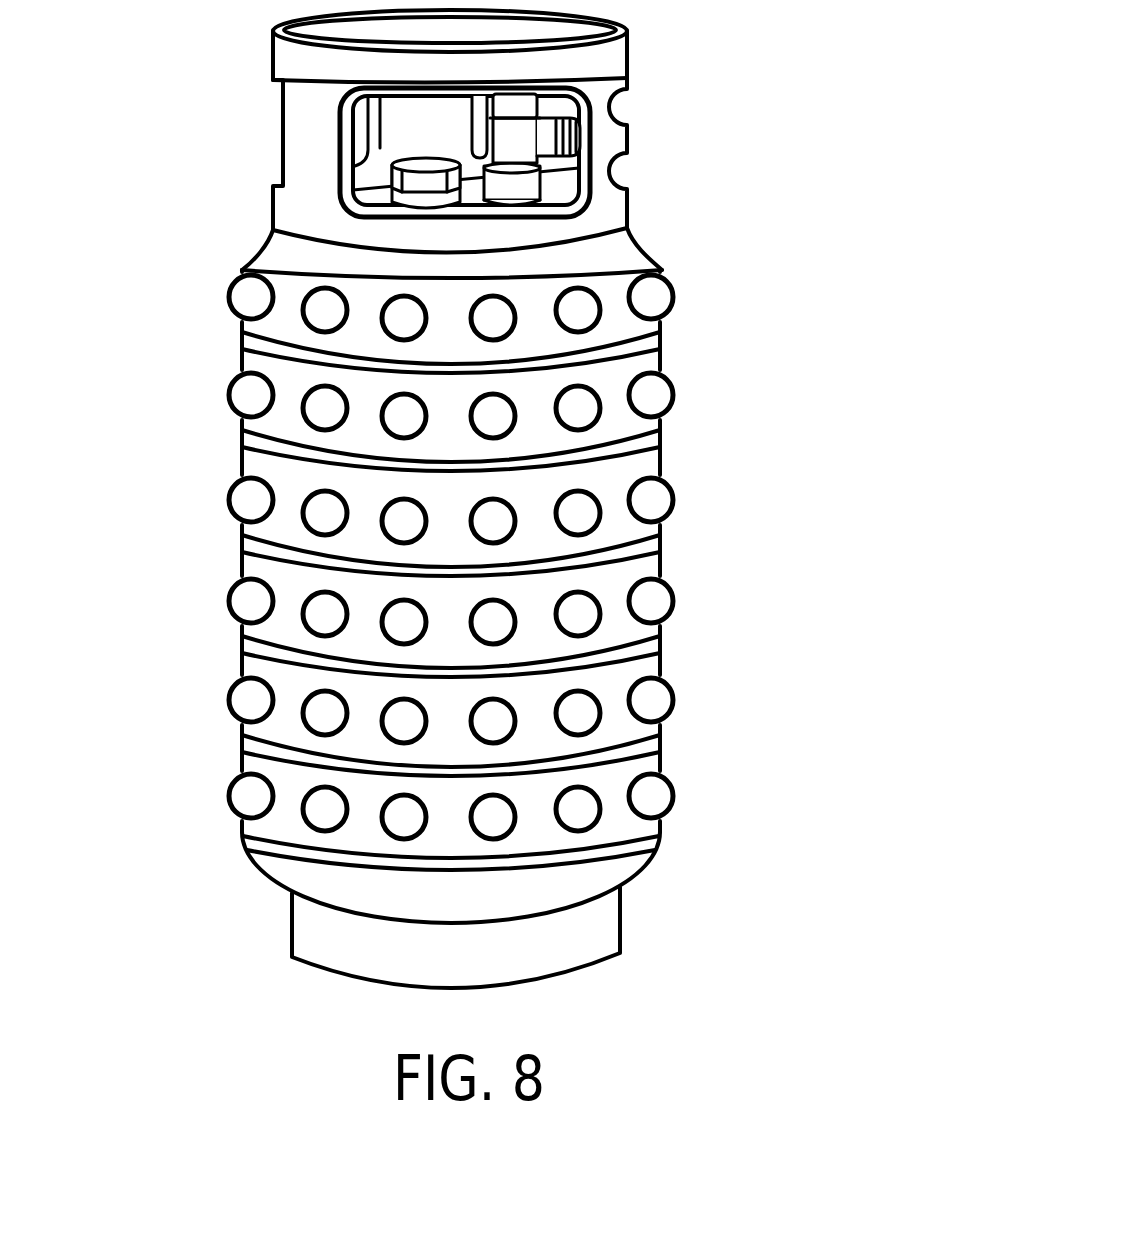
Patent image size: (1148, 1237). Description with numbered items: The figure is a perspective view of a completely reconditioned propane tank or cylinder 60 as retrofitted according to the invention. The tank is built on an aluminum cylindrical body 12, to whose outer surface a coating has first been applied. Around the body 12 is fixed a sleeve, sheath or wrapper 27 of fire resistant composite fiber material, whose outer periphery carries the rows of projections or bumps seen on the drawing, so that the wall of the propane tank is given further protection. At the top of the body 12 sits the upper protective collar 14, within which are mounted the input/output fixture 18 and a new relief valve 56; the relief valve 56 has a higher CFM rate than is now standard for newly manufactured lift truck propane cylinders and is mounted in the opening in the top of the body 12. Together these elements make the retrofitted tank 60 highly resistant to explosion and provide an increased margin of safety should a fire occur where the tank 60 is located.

The cylindrical body 12 is at (640, 875).
The upper protective collar 14 is at (567, 65).
The input/output fixture 18 is at (537, 137).
The sleeve 27 is at (622, 430).
The relief valve 56 is at (422, 160).
The reconditioned propane tank 60 is at (586, 639).